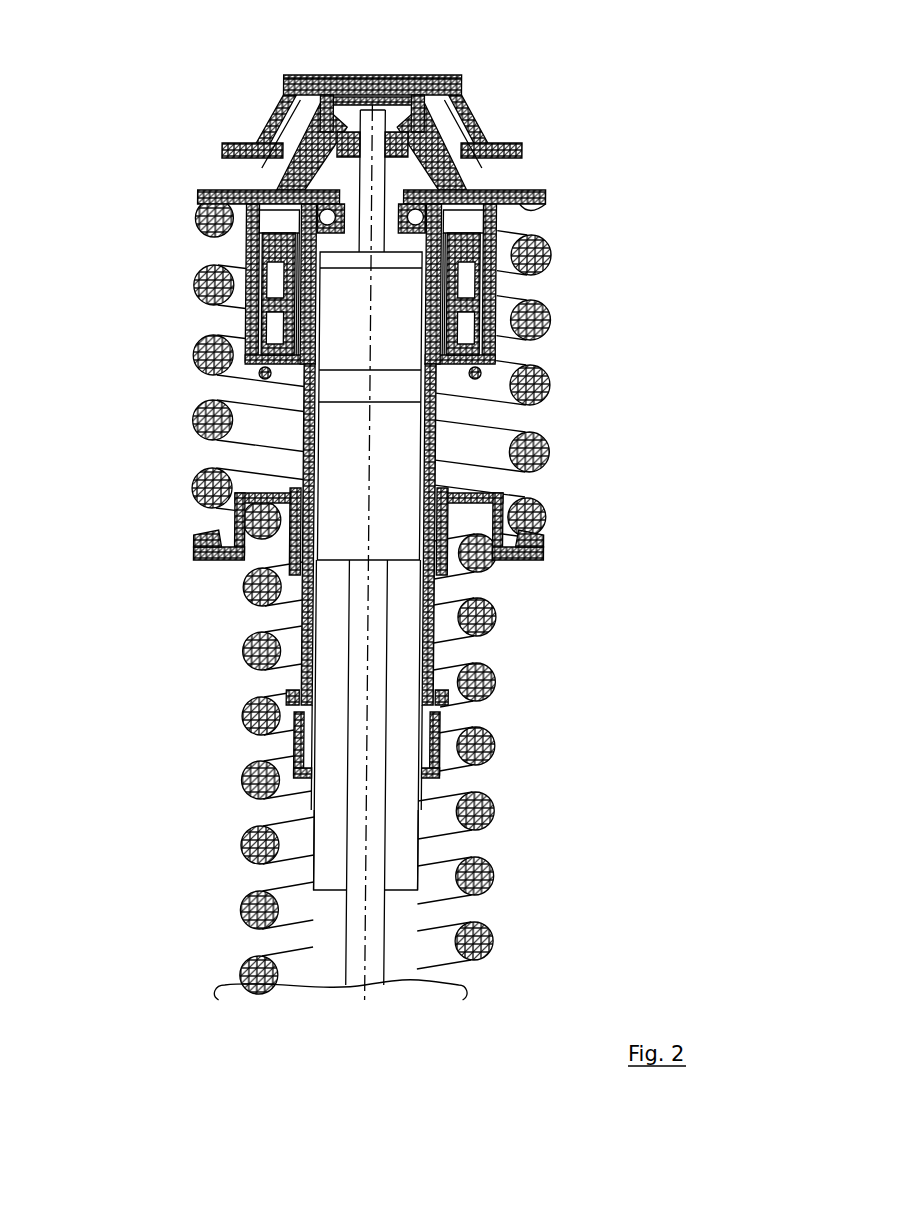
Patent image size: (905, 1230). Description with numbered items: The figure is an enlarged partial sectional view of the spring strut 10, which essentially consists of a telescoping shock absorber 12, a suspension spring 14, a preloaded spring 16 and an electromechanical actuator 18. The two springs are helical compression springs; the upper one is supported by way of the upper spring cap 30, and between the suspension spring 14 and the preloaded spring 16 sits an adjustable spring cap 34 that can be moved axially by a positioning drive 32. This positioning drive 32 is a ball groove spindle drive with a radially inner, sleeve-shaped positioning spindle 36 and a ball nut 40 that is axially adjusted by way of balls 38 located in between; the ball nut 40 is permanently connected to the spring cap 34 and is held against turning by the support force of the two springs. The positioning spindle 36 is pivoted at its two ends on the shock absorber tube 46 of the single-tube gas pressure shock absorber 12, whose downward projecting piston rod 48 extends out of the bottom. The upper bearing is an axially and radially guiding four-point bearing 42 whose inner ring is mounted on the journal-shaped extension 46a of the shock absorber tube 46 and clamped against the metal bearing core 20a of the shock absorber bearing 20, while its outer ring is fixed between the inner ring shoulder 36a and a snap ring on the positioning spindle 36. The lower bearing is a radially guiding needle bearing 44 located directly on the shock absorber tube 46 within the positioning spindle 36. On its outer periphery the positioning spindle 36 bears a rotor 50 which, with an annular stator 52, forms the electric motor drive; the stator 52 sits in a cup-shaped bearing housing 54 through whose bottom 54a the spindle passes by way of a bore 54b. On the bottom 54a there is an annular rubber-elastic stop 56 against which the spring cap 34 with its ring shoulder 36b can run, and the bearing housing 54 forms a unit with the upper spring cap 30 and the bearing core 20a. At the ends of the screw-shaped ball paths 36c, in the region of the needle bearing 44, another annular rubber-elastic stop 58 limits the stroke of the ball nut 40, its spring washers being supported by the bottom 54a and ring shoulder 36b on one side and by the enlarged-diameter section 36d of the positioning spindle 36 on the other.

The spring strut 10 is at (116, 338).
The telescoping shock absorber 12 is at (303, 820).
The suspension spring 14 is at (496, 744).
The preloaded spring 16 is at (549, 375).
The electromechanical actuator 18 is at (510, 357).
The shock absorber bearing 20 is at (520, 72).
The metal bearing core 20a is at (463, 136).
The upper spring cap 30 is at (232, 192).
The positioning drive 32 is at (462, 480).
The adjustable spring cap 34 is at (233, 558).
The positioning spindle 36 is at (442, 638).
The inner ring shoulder 36a is at (407, 254).
The ring shoulder 36b is at (508, 490).
The screw-shaped ball paths 36c is at (306, 462).
The enlarged section of positioning spindle 36d is at (445, 730).
The balls 38 is at (314, 547).
The ball nut 40 is at (452, 568).
The four-point bearing 42 is at (462, 193).
The needle bearing 44 is at (452, 764).
The shock absorber tube 46 is at (452, 843).
The journal-shaped extension 46a is at (422, 226).
The piston rod 48 is at (310, 180).
The rotor 50 is at (313, 338).
The annular stator 52 is at (262, 290).
The cup-shaped bearing housing 54 is at (498, 287).
The bottom of bearing housing 54a is at (492, 373).
The bore 54b is at (325, 372).
The annular rubber-elastic stop 56 is at (262, 373).
The annular rubber-elastic stop 58 is at (293, 696).